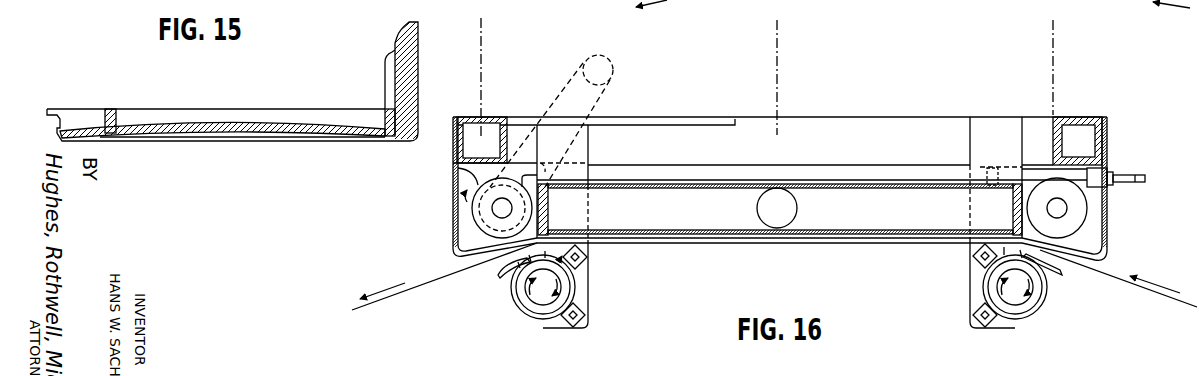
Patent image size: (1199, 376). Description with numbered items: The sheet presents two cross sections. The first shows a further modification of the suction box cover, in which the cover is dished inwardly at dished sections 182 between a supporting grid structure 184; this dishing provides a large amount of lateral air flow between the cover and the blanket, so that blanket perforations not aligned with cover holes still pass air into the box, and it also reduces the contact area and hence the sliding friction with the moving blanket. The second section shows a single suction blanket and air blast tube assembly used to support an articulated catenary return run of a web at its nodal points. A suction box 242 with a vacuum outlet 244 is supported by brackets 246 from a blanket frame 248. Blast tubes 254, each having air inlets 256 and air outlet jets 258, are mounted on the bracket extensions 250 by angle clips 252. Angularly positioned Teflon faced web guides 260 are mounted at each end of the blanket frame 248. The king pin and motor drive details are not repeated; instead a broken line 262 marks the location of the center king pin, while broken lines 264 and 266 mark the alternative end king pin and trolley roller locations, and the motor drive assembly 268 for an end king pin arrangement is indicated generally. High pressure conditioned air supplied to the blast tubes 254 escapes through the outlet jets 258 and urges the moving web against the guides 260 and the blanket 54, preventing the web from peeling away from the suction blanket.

In FIG. 16, the blanket 54 is at (853, 243).
In FIG. 15, the dished section 182 is at (252, 127).
In FIG. 15, the supporting grid structure 184 is at (116, 118).
In FIG. 16, the suction box 242 is at (662, 219).
In FIG. 16, the vacuum outlet 244 is at (797, 213).
In FIG. 16, the brackets 246 is at (588, 157).
In FIG. 16, the blanket frame 248 is at (1086, 116).
In FIG. 16, the bracket extensions 250 is at (590, 323).
In FIG. 16, the angle clips 252 is at (587, 257).
In FIG. 16, the blast tubes 254 is at (538, 322).
In FIG. 16, the air inlets 256 is at (522, 308).
In FIG. 16, the air outlet jets 258 is at (517, 272).
In FIG. 16, the web guides 260 is at (455, 215).
In FIG. 16, the broken line 262 is at (777, 62).
In FIG. 16, the broken line 264 is at (1055, 57).
In FIG. 16, the broken line 266 is at (481, 65).
In FIG. 16, the motor drive assembly 268 is at (616, 78).